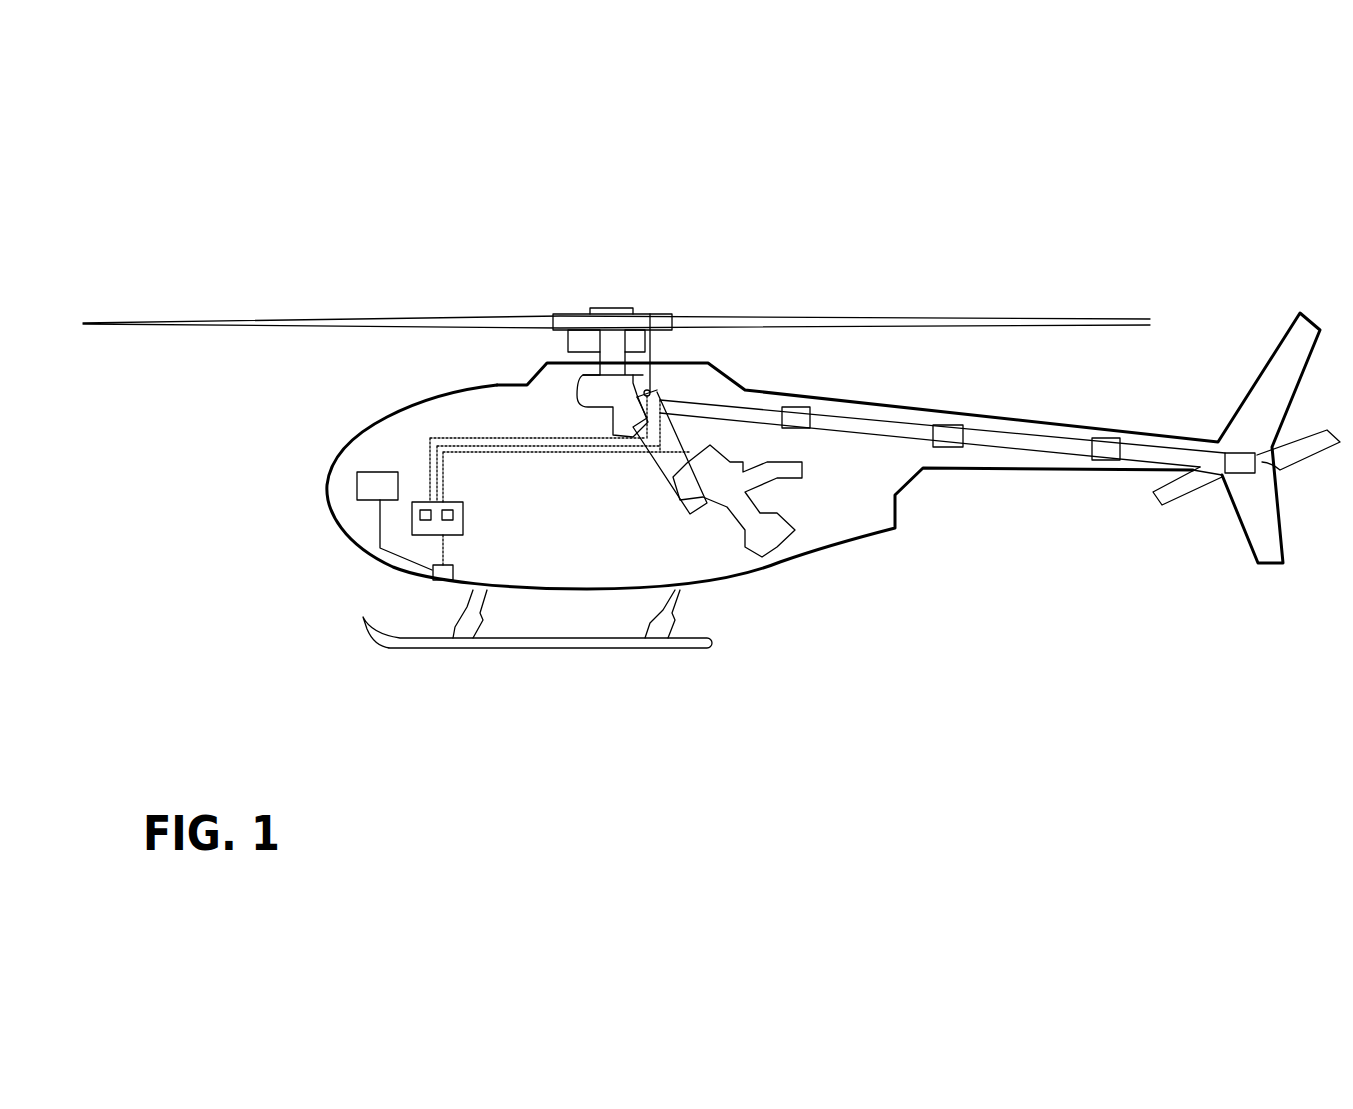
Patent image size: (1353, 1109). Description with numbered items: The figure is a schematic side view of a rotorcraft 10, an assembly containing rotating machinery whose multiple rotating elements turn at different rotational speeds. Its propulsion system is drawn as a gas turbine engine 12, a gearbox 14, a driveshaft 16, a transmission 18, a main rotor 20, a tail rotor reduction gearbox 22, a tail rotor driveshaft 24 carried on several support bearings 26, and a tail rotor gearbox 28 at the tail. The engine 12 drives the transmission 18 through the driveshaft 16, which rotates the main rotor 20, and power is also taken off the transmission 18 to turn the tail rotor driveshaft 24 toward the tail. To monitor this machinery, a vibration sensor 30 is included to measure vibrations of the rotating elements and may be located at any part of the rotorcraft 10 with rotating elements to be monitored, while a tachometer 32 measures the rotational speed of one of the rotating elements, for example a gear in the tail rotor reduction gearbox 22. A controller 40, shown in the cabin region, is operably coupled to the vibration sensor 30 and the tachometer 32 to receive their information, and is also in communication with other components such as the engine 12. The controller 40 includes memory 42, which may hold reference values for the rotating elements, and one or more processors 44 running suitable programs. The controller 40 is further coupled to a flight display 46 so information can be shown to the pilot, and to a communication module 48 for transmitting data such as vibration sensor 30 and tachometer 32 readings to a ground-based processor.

The rotorcraft 10 is at (431, 262).
The gas turbine engine 12 is at (763, 531).
The gearbox 14 is at (683, 494).
The driveshaft 16 is at (657, 455).
The transmission 18 is at (622, 417).
The main rotor 20 is at (612, 347).
The tail rotor reduction gearbox 22 is at (648, 390).
The tail rotor driveshaft 24 is at (993, 440).
The support bearings 26 is at (797, 420).
The tail rotor gearbox 28 is at (1242, 458).
The vibration sensor 30 is at (650, 314).
The tachometer 32 is at (658, 390).
The controller 40 is at (420, 535).
The memory 42 is at (420, 514).
The processors 44 is at (447, 522).
The flight display 46 is at (357, 481).
The communication module 48 is at (443, 581).